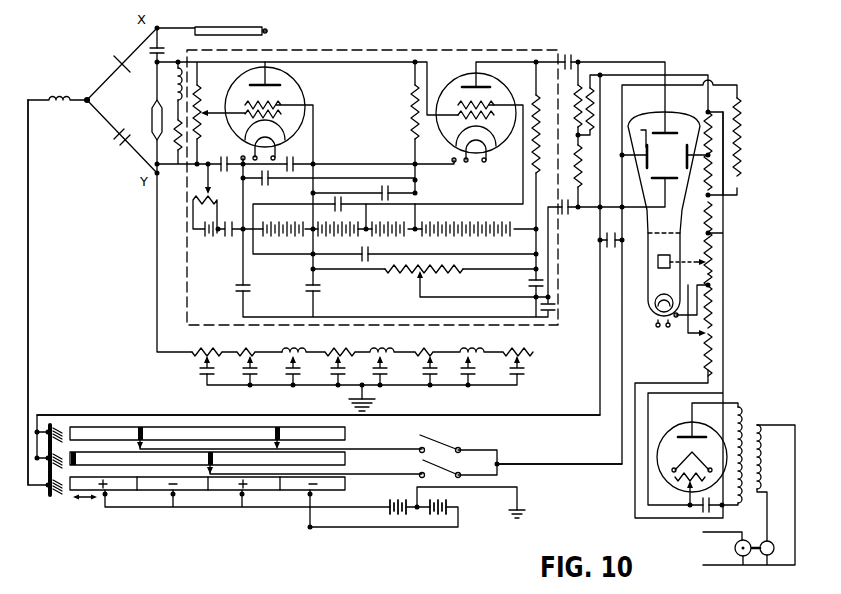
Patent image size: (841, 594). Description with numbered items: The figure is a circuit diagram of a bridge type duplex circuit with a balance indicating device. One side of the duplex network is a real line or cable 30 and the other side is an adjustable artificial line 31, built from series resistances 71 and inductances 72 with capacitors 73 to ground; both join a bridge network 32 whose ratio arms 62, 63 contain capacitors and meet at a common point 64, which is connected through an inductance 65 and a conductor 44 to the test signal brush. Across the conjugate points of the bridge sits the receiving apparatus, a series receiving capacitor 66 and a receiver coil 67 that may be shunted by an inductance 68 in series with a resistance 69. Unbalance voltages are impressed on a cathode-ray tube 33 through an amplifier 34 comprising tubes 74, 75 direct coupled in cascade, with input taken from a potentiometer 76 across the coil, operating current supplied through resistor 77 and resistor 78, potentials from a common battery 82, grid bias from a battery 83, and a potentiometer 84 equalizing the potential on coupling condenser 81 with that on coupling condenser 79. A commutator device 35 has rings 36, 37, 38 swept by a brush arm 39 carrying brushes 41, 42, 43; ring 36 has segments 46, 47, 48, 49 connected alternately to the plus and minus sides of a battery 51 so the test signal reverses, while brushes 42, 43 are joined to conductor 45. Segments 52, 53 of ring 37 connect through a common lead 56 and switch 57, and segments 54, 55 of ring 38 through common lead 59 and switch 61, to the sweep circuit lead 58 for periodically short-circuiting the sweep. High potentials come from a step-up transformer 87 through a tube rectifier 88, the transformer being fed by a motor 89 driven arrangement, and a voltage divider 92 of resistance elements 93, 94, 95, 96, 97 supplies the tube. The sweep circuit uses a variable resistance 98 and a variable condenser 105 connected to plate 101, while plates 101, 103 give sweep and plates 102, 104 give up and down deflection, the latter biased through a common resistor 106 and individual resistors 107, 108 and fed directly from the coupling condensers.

The real line or cable 30 is at (232, 25).
The artificial line 31 is at (357, 368).
The network 32 is at (92, 101).
The cathode-ray tube 33 is at (669, 211).
The amplifier 34 is at (366, 50).
The commutator device 35 is at (238, 484).
The commutator ring 36 is at (347, 484).
The commutator ring 37 is at (347, 459).
The commutator ring 38 is at (347, 434).
The brush arm 39 is at (42, 475).
The brush 41 is at (60, 500).
The brush 42 is at (63, 490).
The brush 43 is at (60, 428).
The conductor 44 is at (29, 326).
The conductor 45 is at (436, 416).
The segment 46 is at (127, 487).
The segment 47 is at (162, 487).
The segment 48 is at (228, 487).
The segment 49 is at (297, 487).
The battery 51 is at (390, 511).
The first segment 52 is at (73, 455).
The second segment 53 is at (212, 451).
The segment 54 is at (140, 426).
The segment 55 is at (277, 426).
The common lead 56 is at (384, 478).
The switch 57 is at (445, 469).
The lead 58 is at (541, 465).
The common lead 59 is at (384, 453).
The switch 61 is at (445, 443).
The ratio arm 62 is at (133, 53).
The ratio arm 63 is at (136, 157).
The common point 64 is at (76, 115).
The inductance 65 is at (66, 97).
The series receiving capacitor 66 is at (161, 52).
The receiver coil 67 is at (155, 106).
The inductance 68 is at (181, 76).
The resistance 69 is at (176, 160).
The resistances 71 is at (246, 350).
The inductances 72 is at (286, 350).
The capacitors 73 is at (200, 396).
The electron tube 74 is at (292, 86).
The electron tube 75 is at (500, 89).
The potentiometer 76 is at (200, 97).
The resistor 77 is at (412, 109).
The resistor 78 is at (531, 165).
The coupling condenser 79 is at (569, 56).
The coupling condenser 81 is at (566, 211).
The battery 82 is at (296, 241).
The battery 83 is at (229, 236).
The potentiometer 84 is at (412, 276).
The step-up transformer 87 is at (748, 426).
The tube rectifier 88 is at (666, 438).
The motor 89 is at (744, 558).
The voltage divider 92 is at (708, 276).
The resistance element 93 is at (715, 342).
The resistance element 94 is at (715, 258).
The resistance element 95 is at (715, 216).
The resistance element 96 is at (726, 191).
The resistance element 97 is at (715, 147).
The variable resistance 98 is at (742, 114).
The quadrant plate 101 is at (644, 128).
The quadrant plate 102 is at (677, 136).
The quadrant plate 103 is at (667, 156).
The quadrant plate 104 is at (682, 173).
The variable condenser 105 is at (606, 244).
The common resistor 106 is at (594, 90).
The individual resistor 107 is at (576, 114).
The individual resistor 108 is at (576, 182).